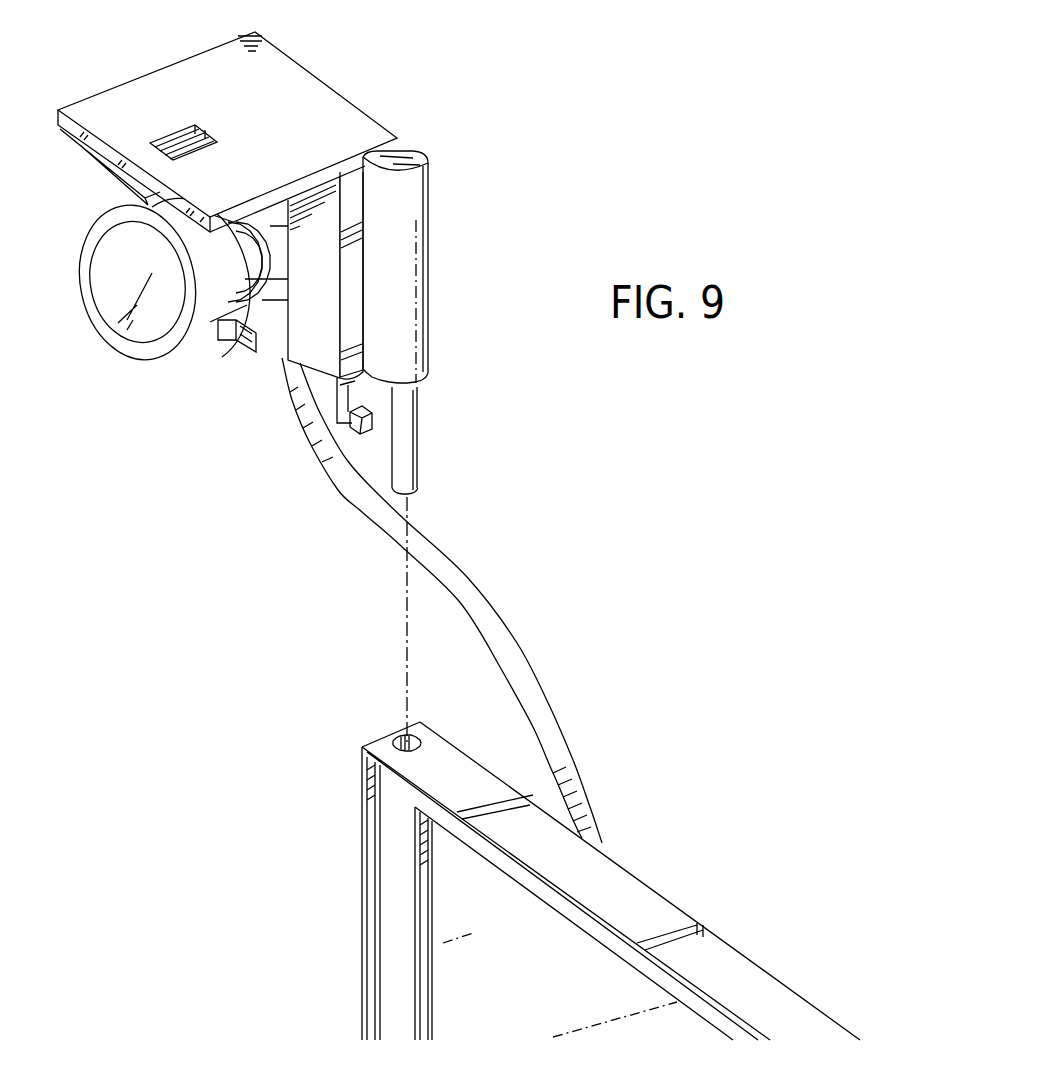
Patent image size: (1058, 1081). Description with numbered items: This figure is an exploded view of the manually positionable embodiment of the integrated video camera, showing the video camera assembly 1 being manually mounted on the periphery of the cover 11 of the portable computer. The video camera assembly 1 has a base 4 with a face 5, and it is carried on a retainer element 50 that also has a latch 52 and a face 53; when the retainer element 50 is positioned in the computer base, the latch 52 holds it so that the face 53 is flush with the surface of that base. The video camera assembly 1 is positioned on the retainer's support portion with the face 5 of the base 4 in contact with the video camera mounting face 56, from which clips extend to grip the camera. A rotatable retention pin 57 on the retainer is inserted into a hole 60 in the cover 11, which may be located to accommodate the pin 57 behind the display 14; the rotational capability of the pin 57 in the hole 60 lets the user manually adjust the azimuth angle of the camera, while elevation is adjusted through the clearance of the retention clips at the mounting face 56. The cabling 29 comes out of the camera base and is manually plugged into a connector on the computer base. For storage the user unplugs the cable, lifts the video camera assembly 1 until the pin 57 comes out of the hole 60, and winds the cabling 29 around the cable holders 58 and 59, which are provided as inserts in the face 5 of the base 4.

The video camera assembly 1 is at (124, 364).
The base 4 is at (273, 328).
The face 5 is at (352, 303).
The cover 11 is at (632, 888).
The display 14 is at (542, 1001).
The cabling 29 is at (457, 598).
The retainer element 50 is at (316, 61).
The latch 52 is at (120, 180).
The face 53 is at (189, 72).
The video camera mounting face 56 is at (336, 368).
The rotatable retention pin 57 is at (398, 433).
The cable holder 58 is at (352, 425).
The cable holder 59 is at (230, 338).
The hole 60 is at (402, 740).